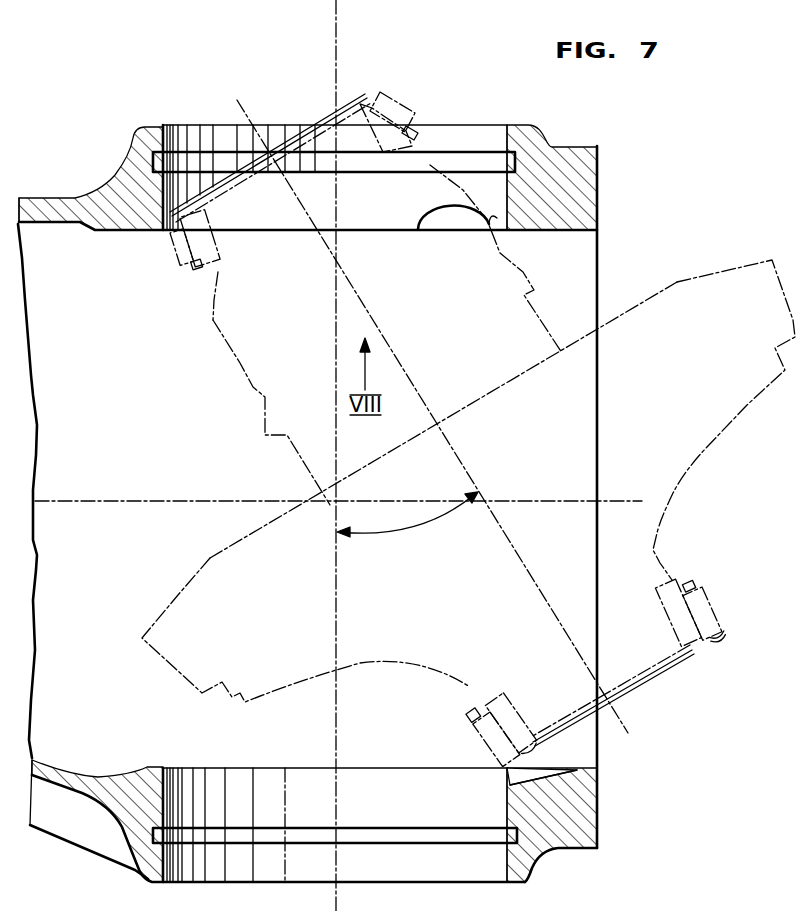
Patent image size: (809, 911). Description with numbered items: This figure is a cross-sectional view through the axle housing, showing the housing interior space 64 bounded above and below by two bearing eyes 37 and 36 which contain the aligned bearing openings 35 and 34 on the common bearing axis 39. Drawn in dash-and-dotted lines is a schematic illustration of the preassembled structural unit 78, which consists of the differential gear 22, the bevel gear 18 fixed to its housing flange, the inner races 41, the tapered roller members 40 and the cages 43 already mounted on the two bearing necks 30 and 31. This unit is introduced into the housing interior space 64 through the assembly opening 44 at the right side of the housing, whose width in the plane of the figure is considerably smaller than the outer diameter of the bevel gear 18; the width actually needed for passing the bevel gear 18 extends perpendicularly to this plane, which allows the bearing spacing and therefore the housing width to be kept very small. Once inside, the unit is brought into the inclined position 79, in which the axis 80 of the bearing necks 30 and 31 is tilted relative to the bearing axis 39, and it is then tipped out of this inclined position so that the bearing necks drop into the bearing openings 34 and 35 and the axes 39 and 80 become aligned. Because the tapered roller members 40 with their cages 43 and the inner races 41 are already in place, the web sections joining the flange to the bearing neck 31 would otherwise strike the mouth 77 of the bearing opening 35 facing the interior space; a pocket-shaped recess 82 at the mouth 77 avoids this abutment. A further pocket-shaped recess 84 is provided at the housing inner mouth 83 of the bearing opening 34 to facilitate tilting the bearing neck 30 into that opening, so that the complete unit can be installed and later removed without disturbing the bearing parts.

The bevel gear 18 is at (172, 593).
The differential gear 22 is at (238, 381).
The bearing neck 30 is at (470, 692).
The bearing neck 31 is at (210, 305).
The bearing opening 34 is at (163, 795).
The bearing opening 35 is at (505, 142).
The bearing eye 36 is at (570, 823).
The bearing eye 37 is at (133, 128).
The bearing axis 39 is at (333, 751).
The tapered roller members 40 is at (172, 256).
The inner races 41 is at (195, 270).
The cage 43 is at (287, 134).
The assembly opening 44 is at (563, 232).
The housing interior space 64 is at (55, 257).
The mouth 77 is at (400, 237).
The preassembled structural unit 78 is at (706, 264).
The inclined position 79 is at (404, 518).
The axis of the bearing necks 80 is at (238, 106).
The pocket-shaped recess 82 is at (497, 218).
The housing inner mouth 83 is at (233, 768).
The pocket-shaped recess 84 is at (515, 773).